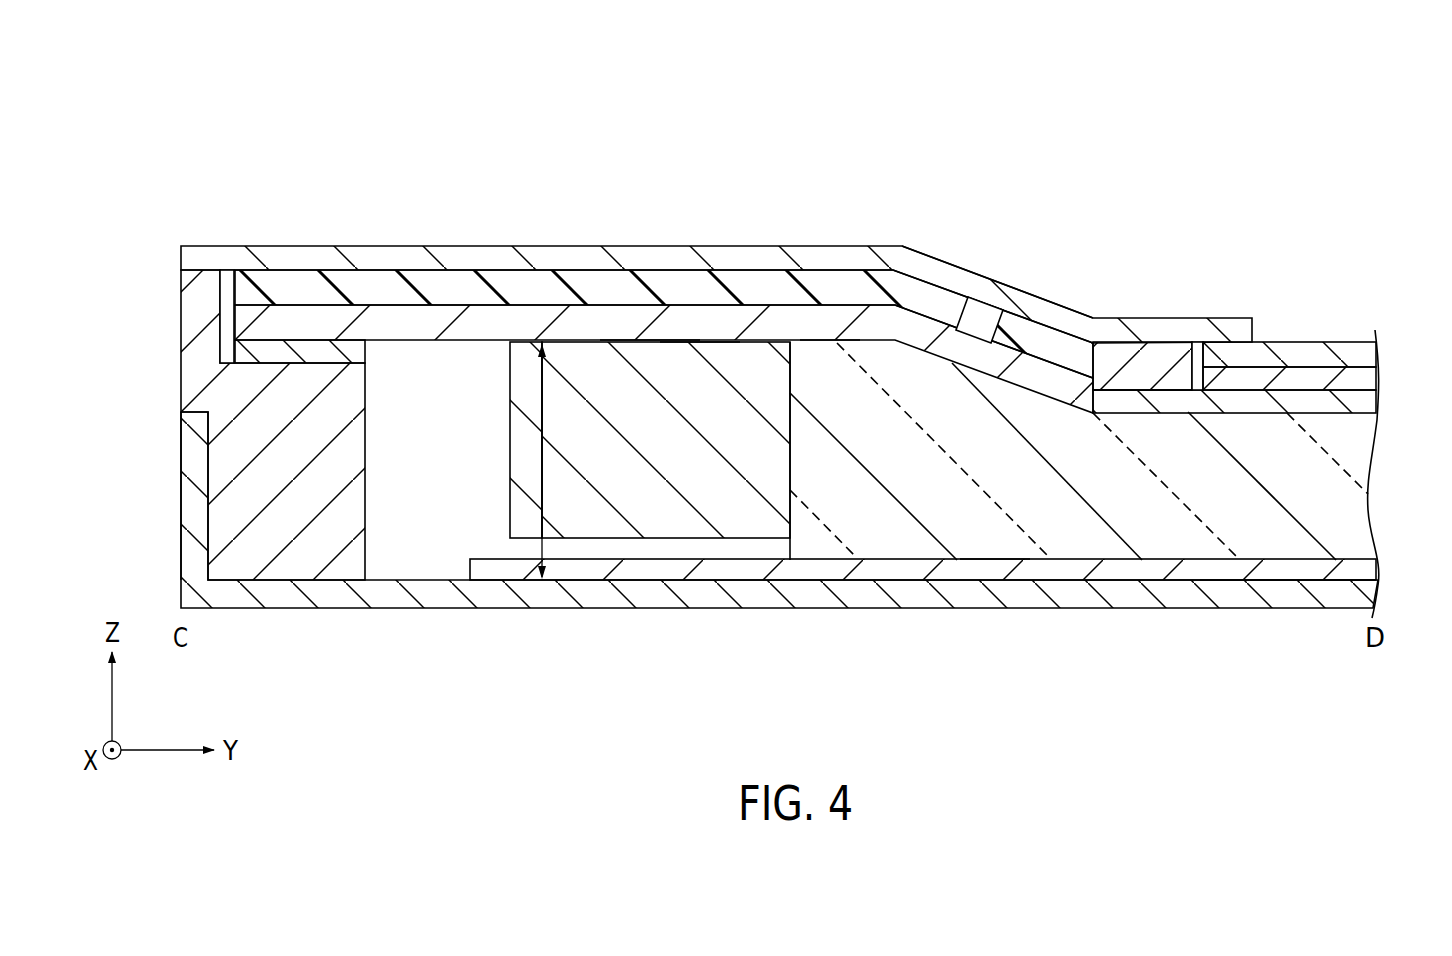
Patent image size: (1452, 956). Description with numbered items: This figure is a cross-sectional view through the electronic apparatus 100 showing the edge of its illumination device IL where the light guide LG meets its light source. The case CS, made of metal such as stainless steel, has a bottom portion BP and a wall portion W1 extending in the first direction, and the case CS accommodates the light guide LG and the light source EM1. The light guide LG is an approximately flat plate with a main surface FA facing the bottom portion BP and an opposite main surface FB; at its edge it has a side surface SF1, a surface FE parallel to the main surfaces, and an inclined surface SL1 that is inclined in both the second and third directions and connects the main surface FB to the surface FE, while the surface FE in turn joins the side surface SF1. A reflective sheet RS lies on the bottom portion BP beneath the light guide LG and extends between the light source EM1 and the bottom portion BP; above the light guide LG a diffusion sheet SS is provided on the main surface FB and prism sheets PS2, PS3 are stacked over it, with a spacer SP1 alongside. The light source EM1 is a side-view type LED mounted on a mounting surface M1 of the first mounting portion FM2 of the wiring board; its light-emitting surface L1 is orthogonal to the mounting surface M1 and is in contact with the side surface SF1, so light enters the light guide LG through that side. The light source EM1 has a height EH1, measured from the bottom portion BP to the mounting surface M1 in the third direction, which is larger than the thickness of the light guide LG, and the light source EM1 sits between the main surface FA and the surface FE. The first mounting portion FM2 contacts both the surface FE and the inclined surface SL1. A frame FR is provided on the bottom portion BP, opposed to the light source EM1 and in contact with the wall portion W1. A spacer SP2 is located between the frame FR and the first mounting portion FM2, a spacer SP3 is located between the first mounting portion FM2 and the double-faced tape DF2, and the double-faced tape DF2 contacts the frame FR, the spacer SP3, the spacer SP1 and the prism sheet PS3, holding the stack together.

The electronic apparatus 100 is at (335, 118).
The illumination device IL is at (1083, 185).
The double-faced tape DF2 is at (510, 258).
The spacer SP3 is at (415, 288).
The first mounting portion FM2 is at (620, 322).
The spacer SP2 is at (280, 343).
The spacer SP1 is at (1130, 352).
The inclined surface SL1 is at (992, 372).
The side surface SF1 is at (777, 373).
The surface FE is at (827, 327).
The wall portion W1 is at (190, 455).
The frame FR is at (298, 560).
The bottom portion BP is at (388, 574).
The case CS is at (1362, 598).
The reflective sheet RS is at (1365, 568).
The light source EM1 is at (638, 523).
The mounting surface M1 is at (697, 347).
The height EH1 is at (565, 461).
The light-emitting surface L1 is at (797, 520).
The light guide LG is at (1355, 457).
The diffusion sheet SS is at (1355, 400).
The prism sheet PS2 is at (1345, 383).
The prism sheet PS3 is at (1345, 355).
The main surface FA is at (995, 568).
The main surface FB is at (1143, 392).